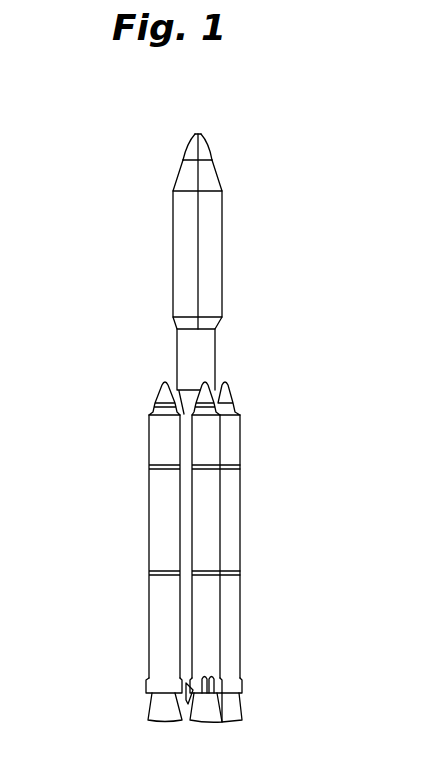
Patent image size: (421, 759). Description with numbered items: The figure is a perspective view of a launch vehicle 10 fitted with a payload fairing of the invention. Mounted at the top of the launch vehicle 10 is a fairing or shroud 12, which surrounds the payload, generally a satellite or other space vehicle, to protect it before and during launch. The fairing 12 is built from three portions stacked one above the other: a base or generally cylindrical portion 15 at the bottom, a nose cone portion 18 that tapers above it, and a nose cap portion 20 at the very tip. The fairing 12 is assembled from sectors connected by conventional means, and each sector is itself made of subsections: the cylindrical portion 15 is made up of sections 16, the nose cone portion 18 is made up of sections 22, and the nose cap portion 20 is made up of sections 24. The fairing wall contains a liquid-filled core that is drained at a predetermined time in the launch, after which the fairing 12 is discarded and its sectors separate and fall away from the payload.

The launch vehicle 10 is at (293, 377).
The fairing or shroud 12 is at (128, 239).
The base or generally cylindrical portion 15 is at (227, 250).
The section of cylindrical portion 16 is at (173, 302).
The nose cone portion 18 is at (226, 178).
The nose cap portion 20 is at (216, 136).
The section of nose cone portion 22 is at (173, 174).
The section of nose cap portion 24 is at (194, 138).